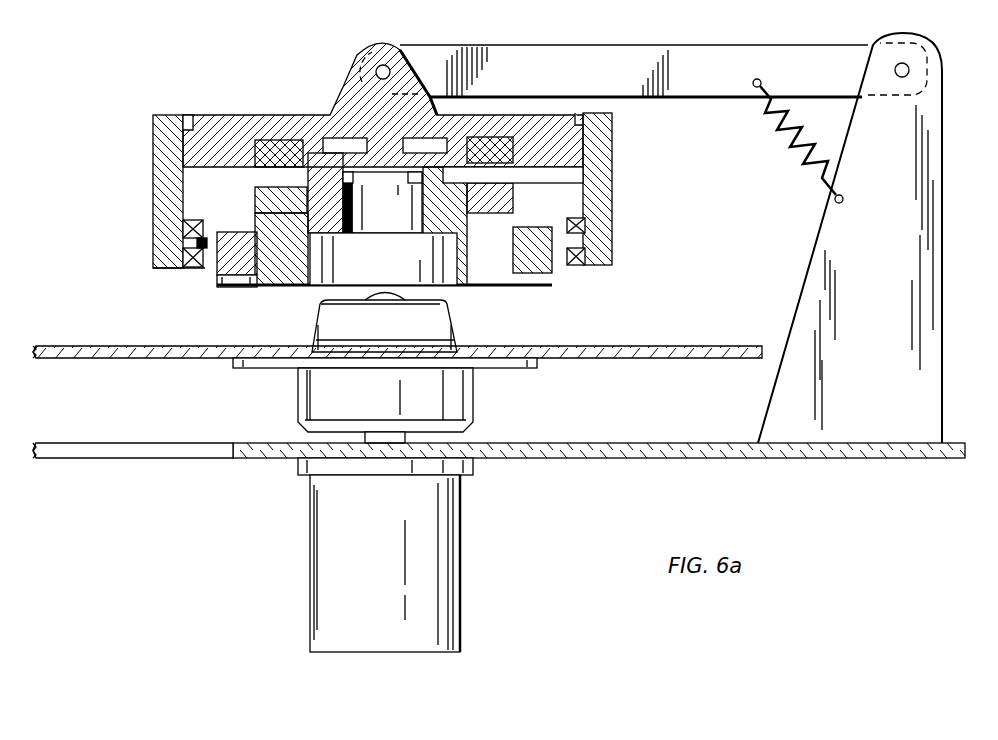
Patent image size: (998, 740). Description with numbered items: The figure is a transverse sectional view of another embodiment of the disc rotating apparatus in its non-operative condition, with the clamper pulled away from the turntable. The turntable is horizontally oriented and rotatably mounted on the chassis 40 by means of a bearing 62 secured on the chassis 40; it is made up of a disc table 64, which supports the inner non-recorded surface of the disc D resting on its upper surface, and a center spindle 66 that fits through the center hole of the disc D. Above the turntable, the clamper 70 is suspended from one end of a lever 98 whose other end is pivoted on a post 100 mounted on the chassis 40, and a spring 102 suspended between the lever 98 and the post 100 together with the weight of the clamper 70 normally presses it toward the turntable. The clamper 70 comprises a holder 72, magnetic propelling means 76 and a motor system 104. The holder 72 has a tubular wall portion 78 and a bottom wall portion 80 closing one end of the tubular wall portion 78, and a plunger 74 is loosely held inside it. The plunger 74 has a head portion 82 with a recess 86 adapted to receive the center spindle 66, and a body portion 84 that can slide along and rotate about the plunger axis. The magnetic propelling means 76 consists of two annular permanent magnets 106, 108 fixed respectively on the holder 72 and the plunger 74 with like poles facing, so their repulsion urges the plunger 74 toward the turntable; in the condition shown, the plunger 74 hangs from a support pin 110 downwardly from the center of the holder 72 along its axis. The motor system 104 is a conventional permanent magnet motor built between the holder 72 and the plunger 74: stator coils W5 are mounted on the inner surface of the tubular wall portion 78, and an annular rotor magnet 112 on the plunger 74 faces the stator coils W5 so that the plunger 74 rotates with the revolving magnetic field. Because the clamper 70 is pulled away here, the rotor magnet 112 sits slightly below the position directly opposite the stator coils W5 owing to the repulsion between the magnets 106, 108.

The chassis 40 is at (662, 450).
The bearing 62 is at (450, 568).
The disc table 64 is at (510, 370).
The center spindle 66 is at (428, 330).
The clamper 70 is at (322, 86).
The holder 72 is at (618, 133).
The plunger 74 is at (516, 204).
The magnetic propelling means 76 is at (505, 177).
The tubular wall portion 78 is at (157, 178).
The bottom wall portion 80 is at (229, 136).
The head portion 82 is at (250, 278).
The body portion 84 is at (383, 259).
The recess 86 is at (365, 292).
The lever 98 is at (603, 52).
The post 100 is at (930, 172).
The spring 102 is at (783, 152).
The motor system 104 is at (560, 228).
The annular permanent magnet 106 is at (263, 170).
The annular permanent magnet 108 is at (277, 200).
The support pin 110 is at (385, 166).
The annular rotor magnet 112 is at (222, 272).
The stator coils W5 is at (192, 268).
The disc D is at (618, 345).